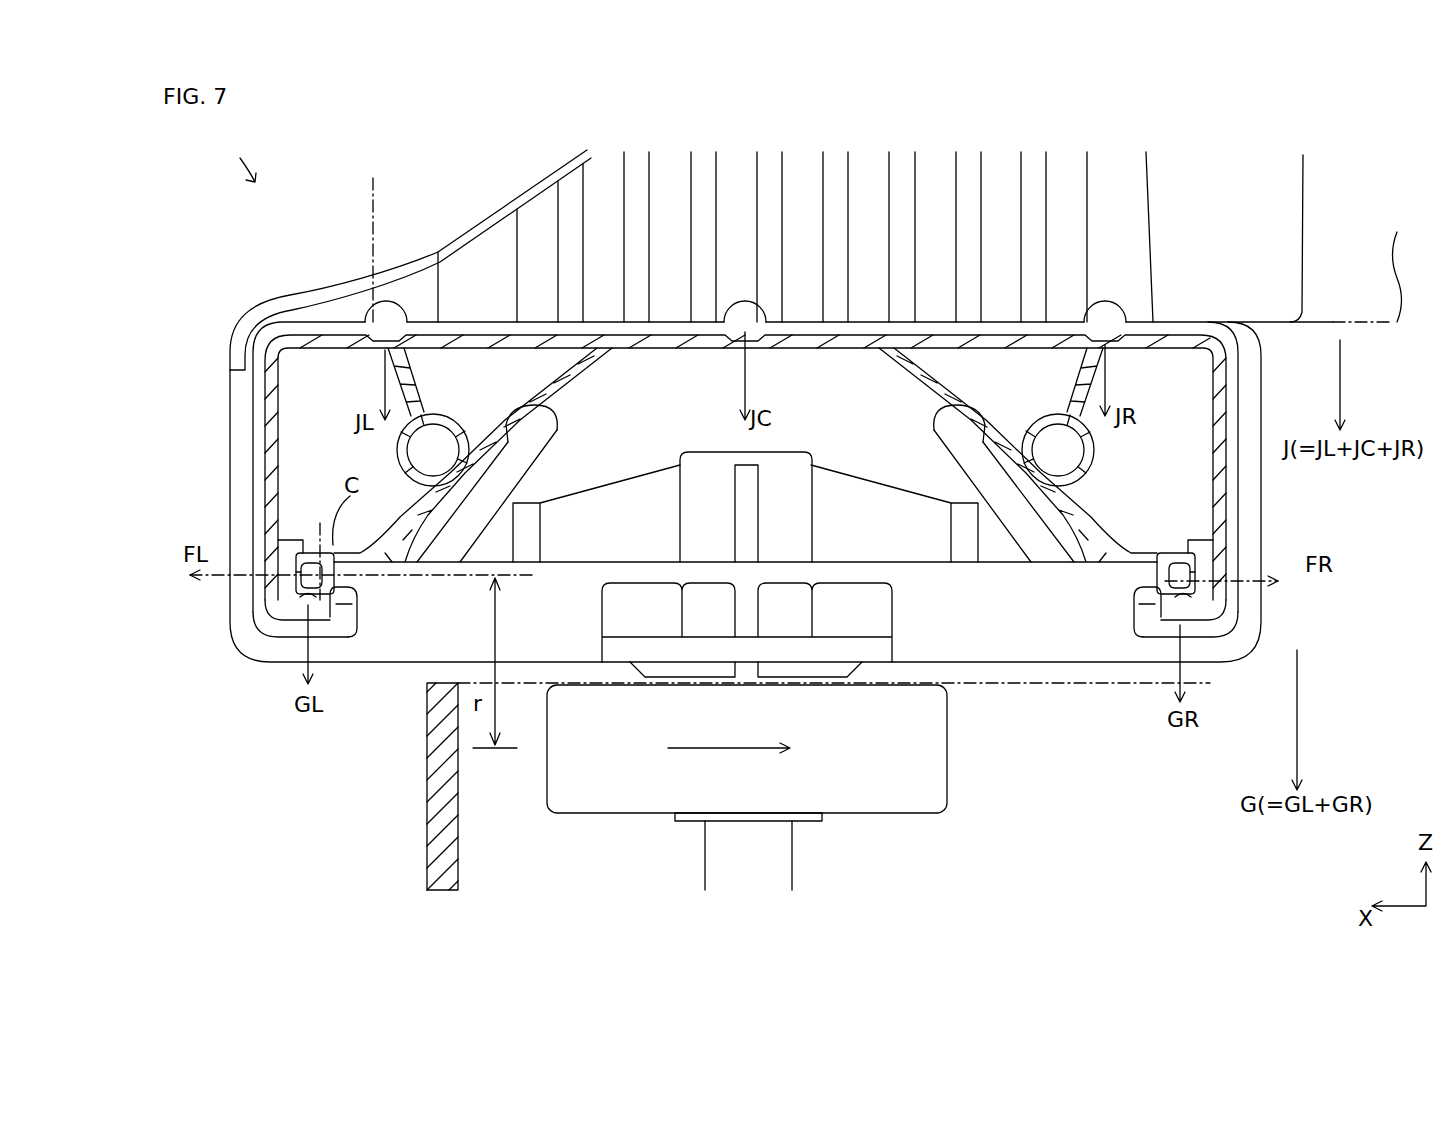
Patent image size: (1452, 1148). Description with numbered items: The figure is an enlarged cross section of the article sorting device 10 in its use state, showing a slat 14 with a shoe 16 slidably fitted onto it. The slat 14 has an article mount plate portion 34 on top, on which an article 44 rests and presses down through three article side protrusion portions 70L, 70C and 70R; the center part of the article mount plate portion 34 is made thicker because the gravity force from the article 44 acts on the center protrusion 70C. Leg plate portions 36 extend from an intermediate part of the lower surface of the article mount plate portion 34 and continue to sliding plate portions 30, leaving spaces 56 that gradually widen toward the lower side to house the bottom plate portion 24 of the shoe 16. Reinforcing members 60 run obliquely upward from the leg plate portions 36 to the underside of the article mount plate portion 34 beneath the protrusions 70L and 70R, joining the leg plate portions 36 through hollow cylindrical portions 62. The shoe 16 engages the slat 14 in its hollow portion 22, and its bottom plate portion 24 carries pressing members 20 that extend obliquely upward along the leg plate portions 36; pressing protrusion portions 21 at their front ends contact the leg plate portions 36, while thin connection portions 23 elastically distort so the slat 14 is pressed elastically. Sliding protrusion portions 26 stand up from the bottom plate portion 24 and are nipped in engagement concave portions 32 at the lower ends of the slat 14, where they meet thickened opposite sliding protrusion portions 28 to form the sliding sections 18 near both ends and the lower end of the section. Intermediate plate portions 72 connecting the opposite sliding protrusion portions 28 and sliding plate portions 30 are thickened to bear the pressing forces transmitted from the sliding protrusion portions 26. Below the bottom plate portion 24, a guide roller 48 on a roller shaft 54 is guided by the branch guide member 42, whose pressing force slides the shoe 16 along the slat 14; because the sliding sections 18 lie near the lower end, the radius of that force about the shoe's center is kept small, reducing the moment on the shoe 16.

The article sorting device 10 is at (239, 156).
The slat 14 is at (262, 344).
The shoe 16 is at (526, 175).
The sliding sections 18 is at (333, 605).
The pressing members 20 is at (519, 488).
The pressing protrusion portions 21 is at (533, 420).
The hollow portion 22 is at (1245, 400).
The connection portions 23 is at (478, 502).
The bottom plate portion 24 is at (1020, 648).
The sliding protrusion portions 26 is at (306, 592).
The opposite sliding protrusion portions 28 is at (322, 615).
The sliding plate portions 30 is at (302, 560).
The engagement concave portions 32 is at (300, 578).
The article mount plate portion 34 is at (1003, 330).
The leg plate portions 36 is at (585, 380).
The branch guide member 42 is at (426, 832).
The article 44 is at (372, 182).
The guide roller 48 is at (897, 772).
The roller shaft 54 is at (767, 854).
The spaces 56 is at (443, 500).
The reinforcing members 60 is at (415, 380).
The cylindrical portions 62 is at (452, 428).
The article side protrusion portion 70L is at (387, 318).
The article side protrusion portion 70C is at (745, 325).
The article side protrusion portion 70R is at (1103, 330).
The intermediate plate portions 72 is at (300, 560).